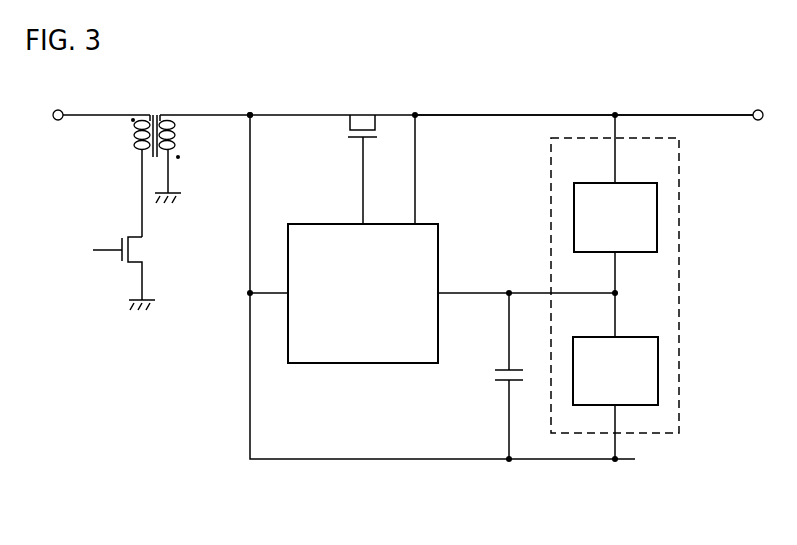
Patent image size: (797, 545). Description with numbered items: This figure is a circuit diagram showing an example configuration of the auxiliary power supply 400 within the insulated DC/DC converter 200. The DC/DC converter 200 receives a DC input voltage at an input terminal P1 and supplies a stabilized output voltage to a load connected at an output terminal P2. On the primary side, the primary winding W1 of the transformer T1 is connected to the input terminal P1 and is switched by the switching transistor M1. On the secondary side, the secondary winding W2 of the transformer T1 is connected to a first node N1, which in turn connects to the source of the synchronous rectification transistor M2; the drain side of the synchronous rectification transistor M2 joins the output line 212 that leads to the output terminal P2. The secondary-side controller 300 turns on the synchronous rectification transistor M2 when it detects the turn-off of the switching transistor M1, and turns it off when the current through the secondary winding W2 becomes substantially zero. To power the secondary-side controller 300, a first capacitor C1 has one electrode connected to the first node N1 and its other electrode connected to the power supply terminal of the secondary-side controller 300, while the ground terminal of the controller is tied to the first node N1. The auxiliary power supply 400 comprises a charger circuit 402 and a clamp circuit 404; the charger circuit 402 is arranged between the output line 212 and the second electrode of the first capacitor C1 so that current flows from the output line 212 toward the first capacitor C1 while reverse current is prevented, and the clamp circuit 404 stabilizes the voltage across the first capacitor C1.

The DC/DC converter 200 is at (410, 287).
The input terminal P1 is at (57, 110).
The output terminal P2 is at (761, 110).
The transformer T1 is at (155, 152).
The primary winding W1 is at (131, 140).
The secondary winding W2 is at (176, 143).
The switching transistor M1 is at (122, 267).
The synchronous rectification transistor M2 is at (365, 112).
The first node N1 is at (250, 112).
The output line 212 is at (558, 113).
The secondary-side controller 300 is at (362, 366).
The first capacitor C1 is at (492, 378).
The auxiliary power supply 400 is at (649, 287).
The charger circuit 402 is at (622, 181).
The clamp circuit 404 is at (622, 334).